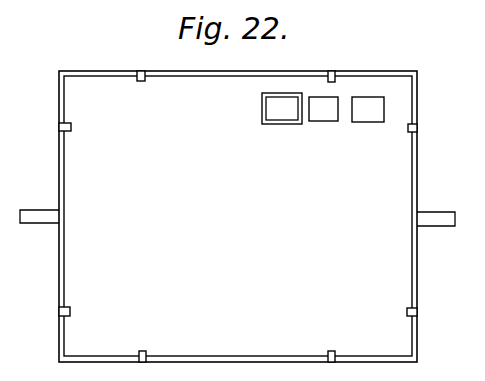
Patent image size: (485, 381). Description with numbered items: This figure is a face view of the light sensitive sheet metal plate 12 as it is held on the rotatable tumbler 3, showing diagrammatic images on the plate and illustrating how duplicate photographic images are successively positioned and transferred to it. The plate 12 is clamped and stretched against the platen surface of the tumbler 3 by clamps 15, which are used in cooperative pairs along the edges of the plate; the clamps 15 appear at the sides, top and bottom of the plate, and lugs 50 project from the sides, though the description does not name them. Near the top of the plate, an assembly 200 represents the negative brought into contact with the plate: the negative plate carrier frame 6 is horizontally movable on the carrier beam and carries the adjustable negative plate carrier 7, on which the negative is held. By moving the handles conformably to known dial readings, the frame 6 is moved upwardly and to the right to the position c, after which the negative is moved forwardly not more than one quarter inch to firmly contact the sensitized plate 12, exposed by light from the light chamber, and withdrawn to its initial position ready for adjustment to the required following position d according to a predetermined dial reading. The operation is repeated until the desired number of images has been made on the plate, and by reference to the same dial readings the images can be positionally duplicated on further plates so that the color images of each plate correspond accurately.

The light sensitive sheet metal plate 12 is at (406, 292).
The rotatable tumbler 3 is at (155, 72).
The clamps 15 is at (418, 128).
The tab 50 is at (34, 209).
The component assembly 200 is at (269, 110).
The adjustable negative plate carrier 7 is at (282, 94).
The negative plate carrier frame 6 is at (298, 110).
The following position d is at (334, 122).
The position c is at (366, 123).